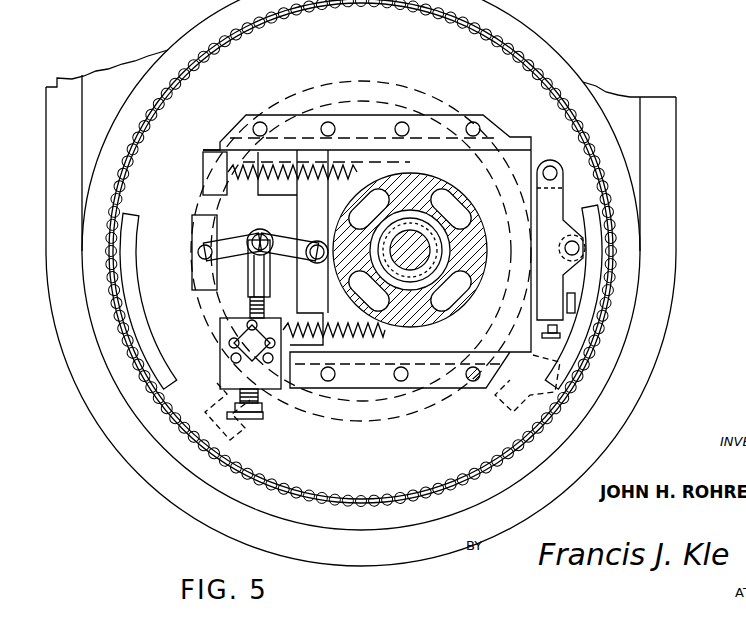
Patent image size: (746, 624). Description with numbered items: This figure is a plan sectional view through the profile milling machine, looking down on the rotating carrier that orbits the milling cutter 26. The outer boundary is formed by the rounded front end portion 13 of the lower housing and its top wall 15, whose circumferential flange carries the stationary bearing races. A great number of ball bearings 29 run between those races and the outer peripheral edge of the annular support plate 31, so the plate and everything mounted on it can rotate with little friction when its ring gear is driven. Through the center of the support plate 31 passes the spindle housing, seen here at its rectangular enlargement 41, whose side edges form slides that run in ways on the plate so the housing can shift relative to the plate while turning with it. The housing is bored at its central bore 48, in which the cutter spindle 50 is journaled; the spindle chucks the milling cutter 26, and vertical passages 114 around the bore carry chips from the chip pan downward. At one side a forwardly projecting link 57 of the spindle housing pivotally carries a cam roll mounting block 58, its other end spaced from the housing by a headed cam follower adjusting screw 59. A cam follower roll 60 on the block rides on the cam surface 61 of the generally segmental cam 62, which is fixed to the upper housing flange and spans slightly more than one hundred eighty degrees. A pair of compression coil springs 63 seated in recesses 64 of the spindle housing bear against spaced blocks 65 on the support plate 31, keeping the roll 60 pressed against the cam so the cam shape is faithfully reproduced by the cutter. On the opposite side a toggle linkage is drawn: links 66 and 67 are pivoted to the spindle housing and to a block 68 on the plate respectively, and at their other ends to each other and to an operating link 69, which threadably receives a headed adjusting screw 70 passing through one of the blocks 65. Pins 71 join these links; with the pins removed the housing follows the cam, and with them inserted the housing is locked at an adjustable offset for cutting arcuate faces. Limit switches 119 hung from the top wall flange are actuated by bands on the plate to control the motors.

The rounded front end portion 13 is at (204, 516).
The top wall 15 is at (616, 97).
The milling cutter 26 is at (413, 230).
The ball bearings 29 is at (200, 52).
The annular support plate 31 is at (520, 80).
The rectangular enlargement 41 is at (453, 160).
The central bore 48 is at (413, 300).
The cutter spindle 50 is at (393, 227).
The forwardly projecting link 57 is at (550, 160).
The cam roll mounting block 58 is at (553, 207).
The cam follower adjusting screw 59 is at (573, 310).
The cam follower roll 60 is at (578, 240).
The cam surface 61 is at (590, 352).
The segmental cam 62 is at (362, 495).
The compression coil springs 63 is at (238, 178).
The recesses 64 is at (310, 190).
The spaced blocks 65 is at (214, 170).
The link 66 is at (280, 235).
The link 67 is at (212, 245).
The block 68 is at (208, 280).
The operating link 69 is at (198, 255).
The headed adjusting screw 70 is at (224, 374).
The pins 71 is at (204, 248).
The vertical passages 114 is at (456, 210).
The limit switches 119 is at (217, 407).